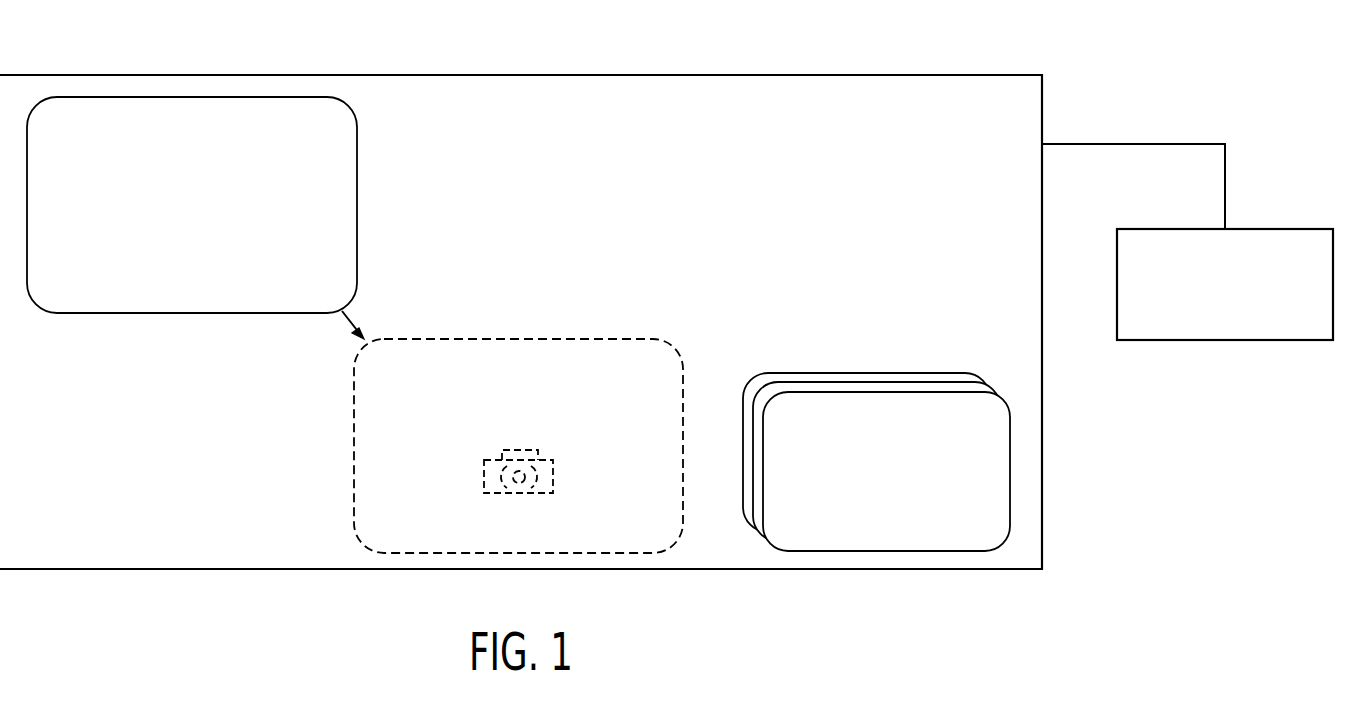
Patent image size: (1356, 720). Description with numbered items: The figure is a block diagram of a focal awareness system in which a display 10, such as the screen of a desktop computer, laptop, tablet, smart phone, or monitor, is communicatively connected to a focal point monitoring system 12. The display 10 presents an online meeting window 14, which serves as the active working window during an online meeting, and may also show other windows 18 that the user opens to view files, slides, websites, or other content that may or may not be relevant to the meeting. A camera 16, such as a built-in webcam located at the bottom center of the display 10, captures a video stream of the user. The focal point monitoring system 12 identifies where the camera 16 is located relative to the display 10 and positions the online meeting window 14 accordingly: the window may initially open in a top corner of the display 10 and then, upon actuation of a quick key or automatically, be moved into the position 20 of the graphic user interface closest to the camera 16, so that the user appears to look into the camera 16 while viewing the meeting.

The display 10 is at (708, 75).
The focal point monitoring system 12 is at (1283, 229).
The online meeting window 14 is at (357, 203).
The camera 16 is at (517, 450).
The other windows 18 is at (873, 373).
The position 20 is at (520, 339).